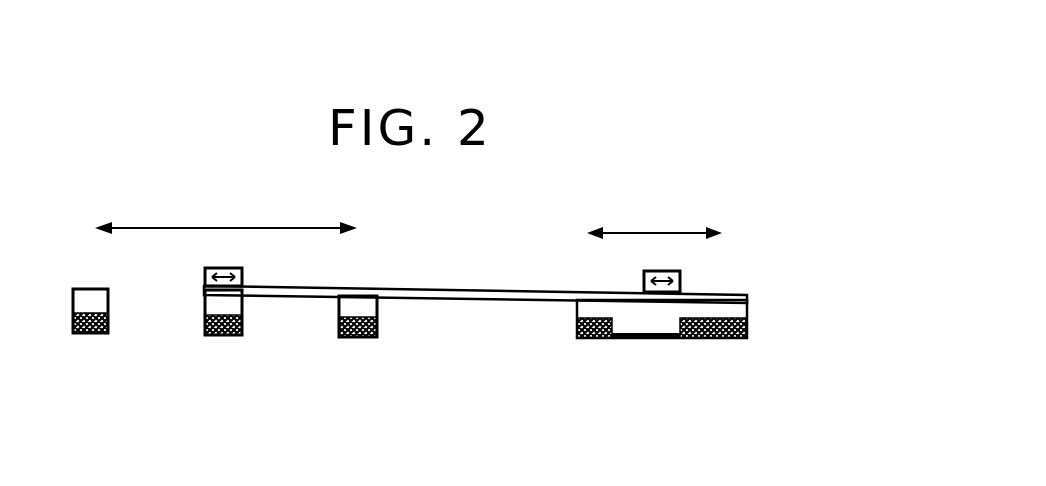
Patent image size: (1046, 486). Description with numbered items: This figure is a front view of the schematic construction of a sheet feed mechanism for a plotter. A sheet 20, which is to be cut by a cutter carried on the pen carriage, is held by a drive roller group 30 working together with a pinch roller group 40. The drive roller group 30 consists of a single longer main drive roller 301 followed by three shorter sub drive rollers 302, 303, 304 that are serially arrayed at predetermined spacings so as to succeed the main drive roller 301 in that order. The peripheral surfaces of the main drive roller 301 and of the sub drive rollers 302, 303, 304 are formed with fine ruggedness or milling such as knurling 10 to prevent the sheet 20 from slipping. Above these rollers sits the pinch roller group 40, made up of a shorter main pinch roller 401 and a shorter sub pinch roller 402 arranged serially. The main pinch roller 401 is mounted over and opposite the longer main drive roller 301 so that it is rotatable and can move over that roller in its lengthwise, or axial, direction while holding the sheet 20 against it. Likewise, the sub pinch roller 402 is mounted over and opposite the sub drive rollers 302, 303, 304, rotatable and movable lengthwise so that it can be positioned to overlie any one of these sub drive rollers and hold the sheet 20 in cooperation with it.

The knurling 10 is at (697, 338).
The sheet 20 is at (470, 298).
The drive roller group 30 is at (729, 296).
The pinch roller group 40 is at (220, 260).
The main drive roller 301 is at (587, 338).
The sub drive roller 302 is at (356, 339).
The sub drive roller 303 is at (222, 337).
The sub drive roller 304 is at (88, 335).
The main pinch roller 401 is at (679, 276).
The sub pinch roller 402 is at (243, 272).